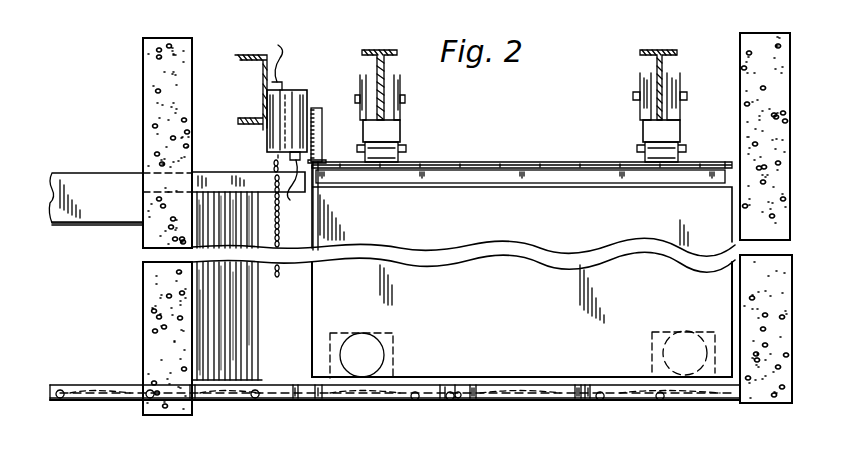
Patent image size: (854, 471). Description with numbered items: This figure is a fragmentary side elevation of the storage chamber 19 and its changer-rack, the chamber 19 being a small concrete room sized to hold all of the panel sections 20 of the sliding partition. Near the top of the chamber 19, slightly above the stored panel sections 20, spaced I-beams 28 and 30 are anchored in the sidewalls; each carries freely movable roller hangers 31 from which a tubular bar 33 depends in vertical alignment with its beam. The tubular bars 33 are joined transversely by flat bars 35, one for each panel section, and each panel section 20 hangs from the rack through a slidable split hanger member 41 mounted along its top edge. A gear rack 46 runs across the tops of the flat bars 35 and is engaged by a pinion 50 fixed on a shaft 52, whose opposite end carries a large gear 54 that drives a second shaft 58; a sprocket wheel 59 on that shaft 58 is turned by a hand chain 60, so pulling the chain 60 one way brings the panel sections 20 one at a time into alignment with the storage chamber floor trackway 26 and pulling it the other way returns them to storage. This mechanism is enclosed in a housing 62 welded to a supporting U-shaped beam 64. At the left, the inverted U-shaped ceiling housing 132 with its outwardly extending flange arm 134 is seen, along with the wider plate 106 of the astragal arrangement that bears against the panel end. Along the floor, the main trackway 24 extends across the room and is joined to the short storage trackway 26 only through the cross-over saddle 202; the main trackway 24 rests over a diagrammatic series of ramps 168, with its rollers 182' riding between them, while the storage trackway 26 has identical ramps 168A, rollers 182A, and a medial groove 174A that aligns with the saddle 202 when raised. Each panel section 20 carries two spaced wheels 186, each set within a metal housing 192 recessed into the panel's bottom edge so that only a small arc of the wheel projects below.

The storage chamber 19 is at (138, 289).
The panel section 20 is at (434, 223).
The main floor trackway 24 is at (80, 380).
The storage chamber floor trackway 26 is at (478, 398).
The I-beam 28 is at (386, 63).
The I-beam 30 is at (664, 52).
The roller hanger 31 is at (410, 97).
The tubular bar 33 is at (385, 140).
The flat bar 35 is at (471, 170).
The split hanger member 41 is at (552, 180).
The gear rack 46 is at (317, 162).
The pinion 50 is at (322, 140).
The shaft 52 is at (319, 122).
The large gear 54 is at (291, 218).
The shaft 58 is at (292, 92).
The sprocket wheel 59 is at (269, 59).
The chain 60 is at (274, 160).
The housing 62 is at (267, 134).
The U-shaped beam 64 is at (263, 78).
The wider plate 106 is at (258, 330).
The inverted U-shaped housing 132 is at (100, 165).
The flange arm 134 is at (80, 228).
The ramp 168 is at (80, 402).
The floor track dashed member 182' is at (165, 412).
The cross-over saddle 202 is at (297, 400).
The ramp 168A is at (422, 386).
The medial groove 174A is at (462, 384).
The floor track member 182A is at (445, 398).
The wheel 186 is at (384, 345).
The metal housing 192 is at (338, 328).